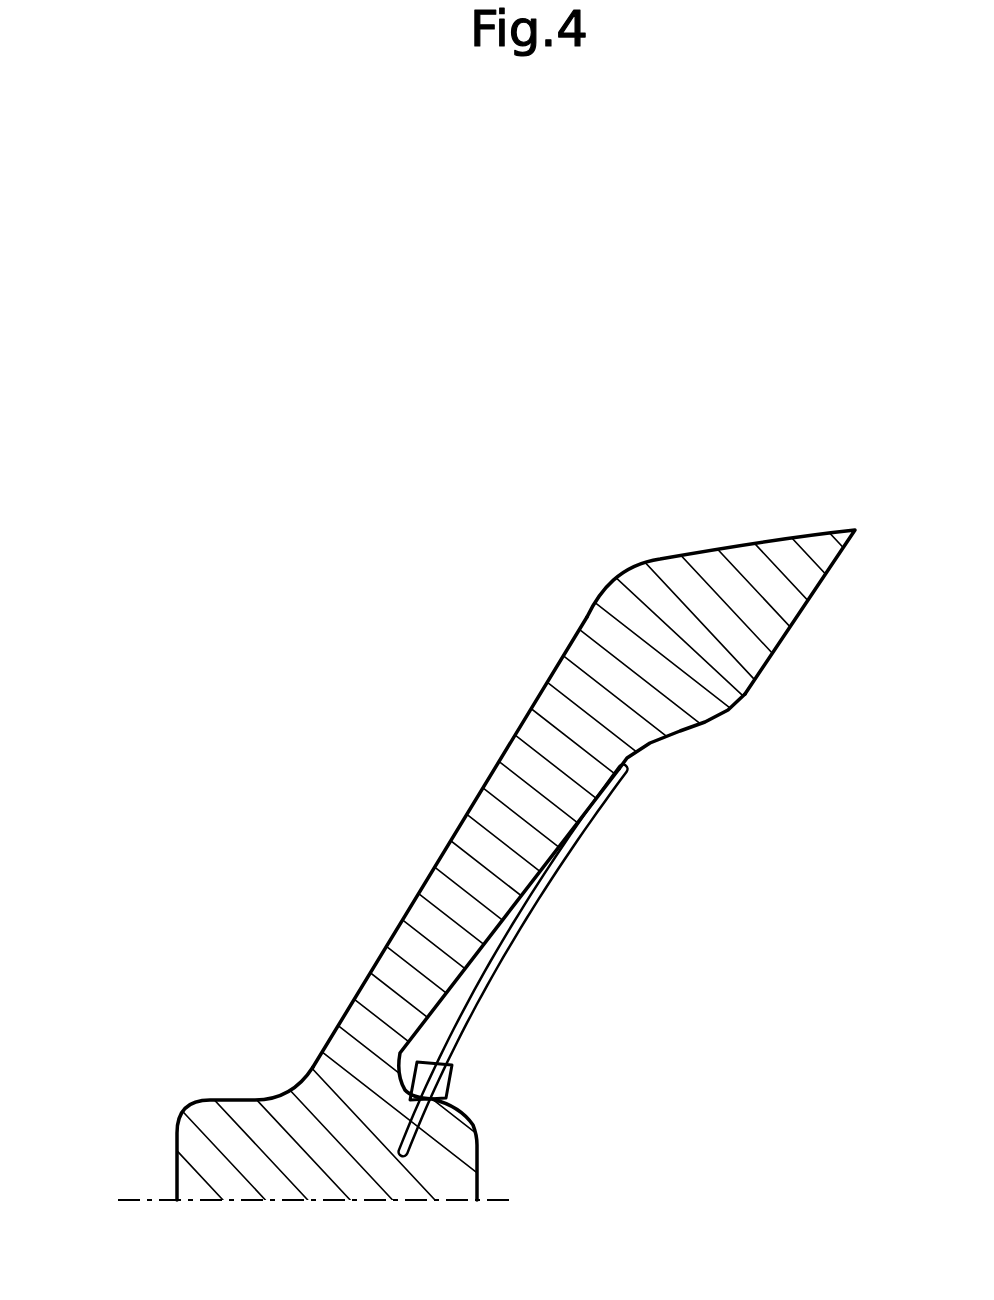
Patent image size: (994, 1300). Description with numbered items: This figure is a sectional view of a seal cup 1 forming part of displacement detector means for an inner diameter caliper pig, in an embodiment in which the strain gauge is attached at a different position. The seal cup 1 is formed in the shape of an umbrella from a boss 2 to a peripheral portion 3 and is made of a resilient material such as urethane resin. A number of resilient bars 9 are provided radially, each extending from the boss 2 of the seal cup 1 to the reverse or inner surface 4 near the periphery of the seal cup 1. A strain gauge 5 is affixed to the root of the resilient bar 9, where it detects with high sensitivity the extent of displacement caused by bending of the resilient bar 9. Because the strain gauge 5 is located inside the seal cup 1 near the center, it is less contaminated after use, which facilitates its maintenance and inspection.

The seal cup 1 is at (424, 675).
The boss 2 is at (196, 1122).
The peripheral portion 3 is at (780, 550).
The inner surface 4 is at (684, 734).
The strain gauge 5 is at (453, 1080).
The resilient bar 9 is at (501, 947).